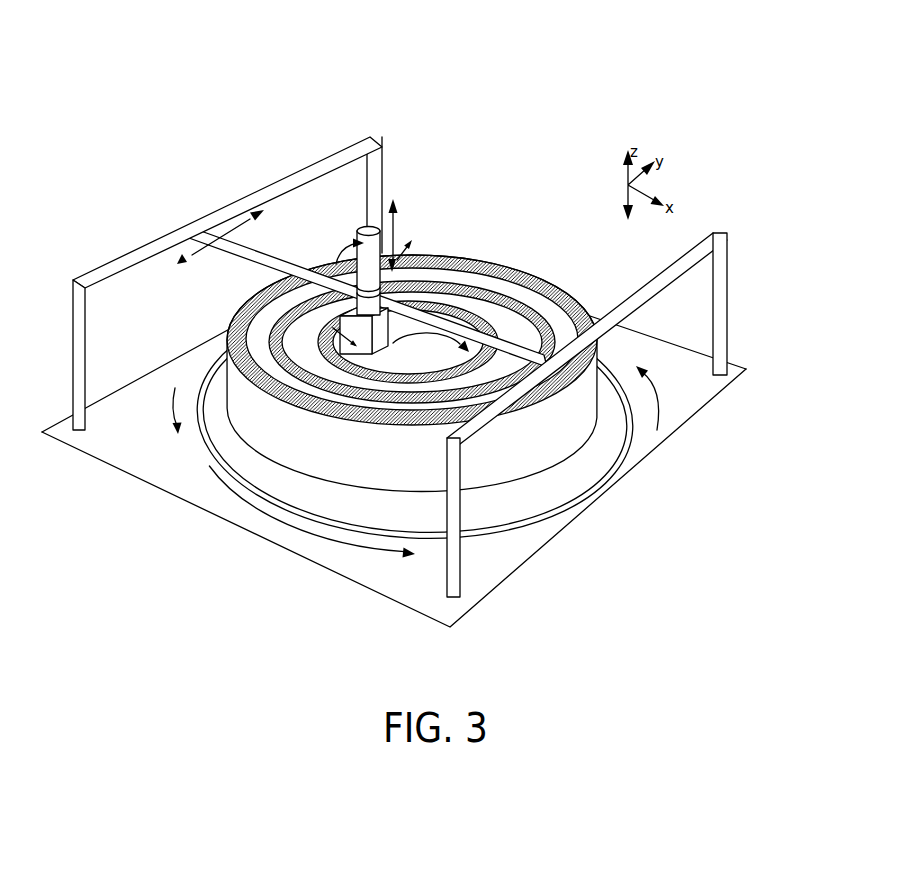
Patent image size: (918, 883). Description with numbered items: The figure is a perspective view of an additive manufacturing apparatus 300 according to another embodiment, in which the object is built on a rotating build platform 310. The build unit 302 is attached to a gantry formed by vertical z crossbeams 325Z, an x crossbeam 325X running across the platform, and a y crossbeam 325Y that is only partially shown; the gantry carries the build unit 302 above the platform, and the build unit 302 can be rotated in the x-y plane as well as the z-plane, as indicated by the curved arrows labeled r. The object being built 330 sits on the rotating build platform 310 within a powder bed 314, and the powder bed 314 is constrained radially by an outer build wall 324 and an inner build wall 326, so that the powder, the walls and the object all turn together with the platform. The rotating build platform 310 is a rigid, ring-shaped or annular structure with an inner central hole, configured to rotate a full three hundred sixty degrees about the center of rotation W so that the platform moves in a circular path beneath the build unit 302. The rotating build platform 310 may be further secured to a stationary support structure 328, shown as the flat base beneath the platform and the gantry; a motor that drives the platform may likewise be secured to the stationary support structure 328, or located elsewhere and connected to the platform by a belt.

The additive manufacturing apparatus 300 is at (230, 81).
The build unit 302 is at (349, 354).
The rotating build platform 310 is at (524, 508).
The powder bed 314 is at (268, 368).
The outer build wall 324 is at (532, 278).
The x crossbeam 325X is at (272, 262).
The y crossbeam 325Y is at (375, 230).
The z crossbeams 325Z is at (724, 270).
The inner build wall 326 is at (436, 299).
The stationary support structure 328 is at (494, 565).
The object being built 330 is at (483, 290).